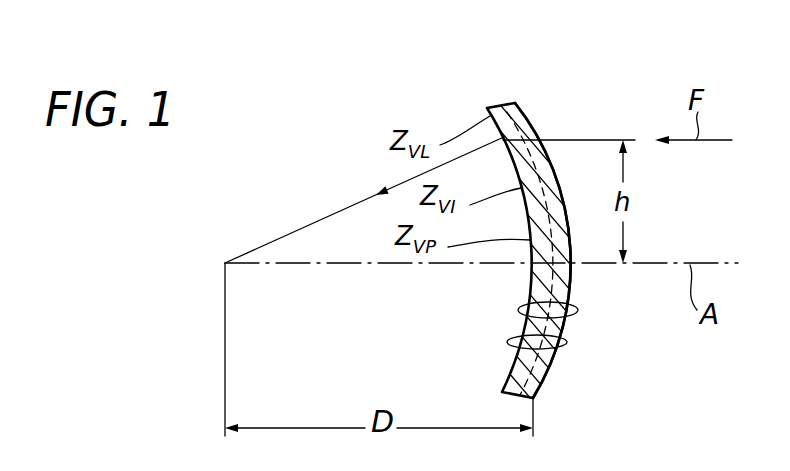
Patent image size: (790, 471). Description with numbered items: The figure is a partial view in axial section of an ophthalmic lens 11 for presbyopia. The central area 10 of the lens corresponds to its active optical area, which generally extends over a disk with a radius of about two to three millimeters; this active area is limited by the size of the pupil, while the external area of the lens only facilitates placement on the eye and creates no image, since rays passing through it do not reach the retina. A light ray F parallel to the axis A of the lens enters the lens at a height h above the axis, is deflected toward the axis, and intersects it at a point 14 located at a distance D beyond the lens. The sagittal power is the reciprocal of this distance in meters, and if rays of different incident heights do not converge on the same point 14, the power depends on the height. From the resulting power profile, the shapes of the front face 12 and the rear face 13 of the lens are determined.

The central area 10 is at (569, 284).
The ophthalmic lens 11 is at (497, 86).
The front face 12 is at (540, 308).
The rear face 13 is at (549, 343).
The point 14 is at (228, 266).